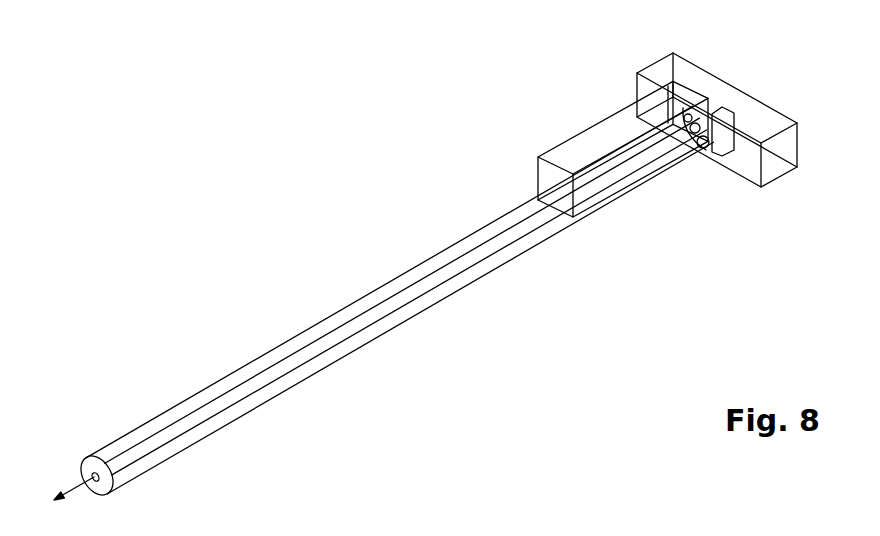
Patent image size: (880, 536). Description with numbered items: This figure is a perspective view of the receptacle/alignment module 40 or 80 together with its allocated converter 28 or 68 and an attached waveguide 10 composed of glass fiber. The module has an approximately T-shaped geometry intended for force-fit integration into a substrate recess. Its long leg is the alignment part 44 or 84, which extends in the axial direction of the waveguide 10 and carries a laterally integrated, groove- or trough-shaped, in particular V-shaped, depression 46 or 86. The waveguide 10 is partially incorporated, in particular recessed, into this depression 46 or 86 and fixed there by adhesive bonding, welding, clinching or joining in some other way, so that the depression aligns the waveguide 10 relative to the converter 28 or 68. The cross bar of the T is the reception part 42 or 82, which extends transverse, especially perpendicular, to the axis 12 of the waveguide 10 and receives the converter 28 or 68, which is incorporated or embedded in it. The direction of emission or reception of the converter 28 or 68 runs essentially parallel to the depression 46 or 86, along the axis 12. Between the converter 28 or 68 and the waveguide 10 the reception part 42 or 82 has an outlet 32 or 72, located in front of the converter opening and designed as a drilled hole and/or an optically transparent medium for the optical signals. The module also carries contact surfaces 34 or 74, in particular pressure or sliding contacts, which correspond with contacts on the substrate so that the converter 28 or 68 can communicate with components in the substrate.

The waveguide 10 is at (437, 298).
The axis 12 is at (51, 512).
The receptacle/alignment module 40 is at (624, 118).
The receptacle/alignment module 80 is at (603, 54).
The alignment part 44 is at (587, 149).
The alignment part 84 is at (608, 128).
The depression 46 is at (485, 185).
The depression 86 is at (557, 187).
The reception part 42 is at (735, 120).
The reception part 82 is at (766, 121).
The outlet 32 is at (706, 76).
The outlet 72 is at (702, 130).
The electro-optical converter 28 is at (751, 99).
The converter 68 is at (714, 104).
The contact surfaces 34 is at (704, 163).
The contact surfaces 74 is at (732, 130).